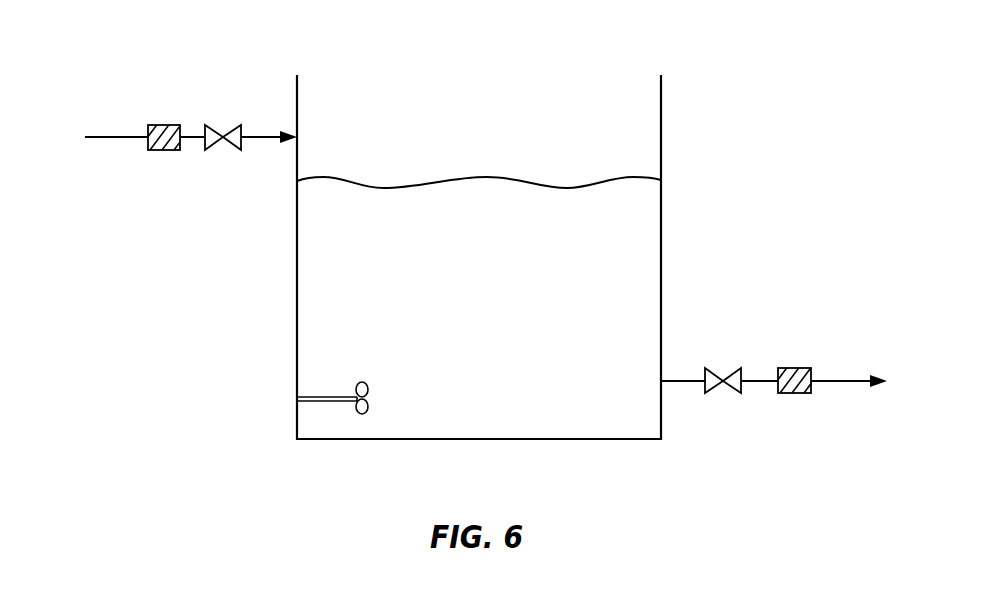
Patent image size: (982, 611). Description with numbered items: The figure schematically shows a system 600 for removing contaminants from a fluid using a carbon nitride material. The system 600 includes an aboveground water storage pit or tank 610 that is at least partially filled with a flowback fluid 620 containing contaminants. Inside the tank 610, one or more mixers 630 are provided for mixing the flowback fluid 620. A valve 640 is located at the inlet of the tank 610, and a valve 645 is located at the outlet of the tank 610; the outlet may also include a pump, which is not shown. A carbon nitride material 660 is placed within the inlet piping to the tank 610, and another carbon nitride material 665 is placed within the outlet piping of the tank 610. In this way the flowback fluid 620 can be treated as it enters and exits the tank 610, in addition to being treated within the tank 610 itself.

The system 600 is at (91, 101).
The tank 610 is at (661, 115).
The flowback fluid 620 is at (500, 379).
The mixer 630 is at (325, 402).
The valve 640 is at (225, 151).
The valve 645 is at (726, 394).
The carbon nitride material 660 is at (167, 125).
The carbon nitride material 665 is at (797, 394).